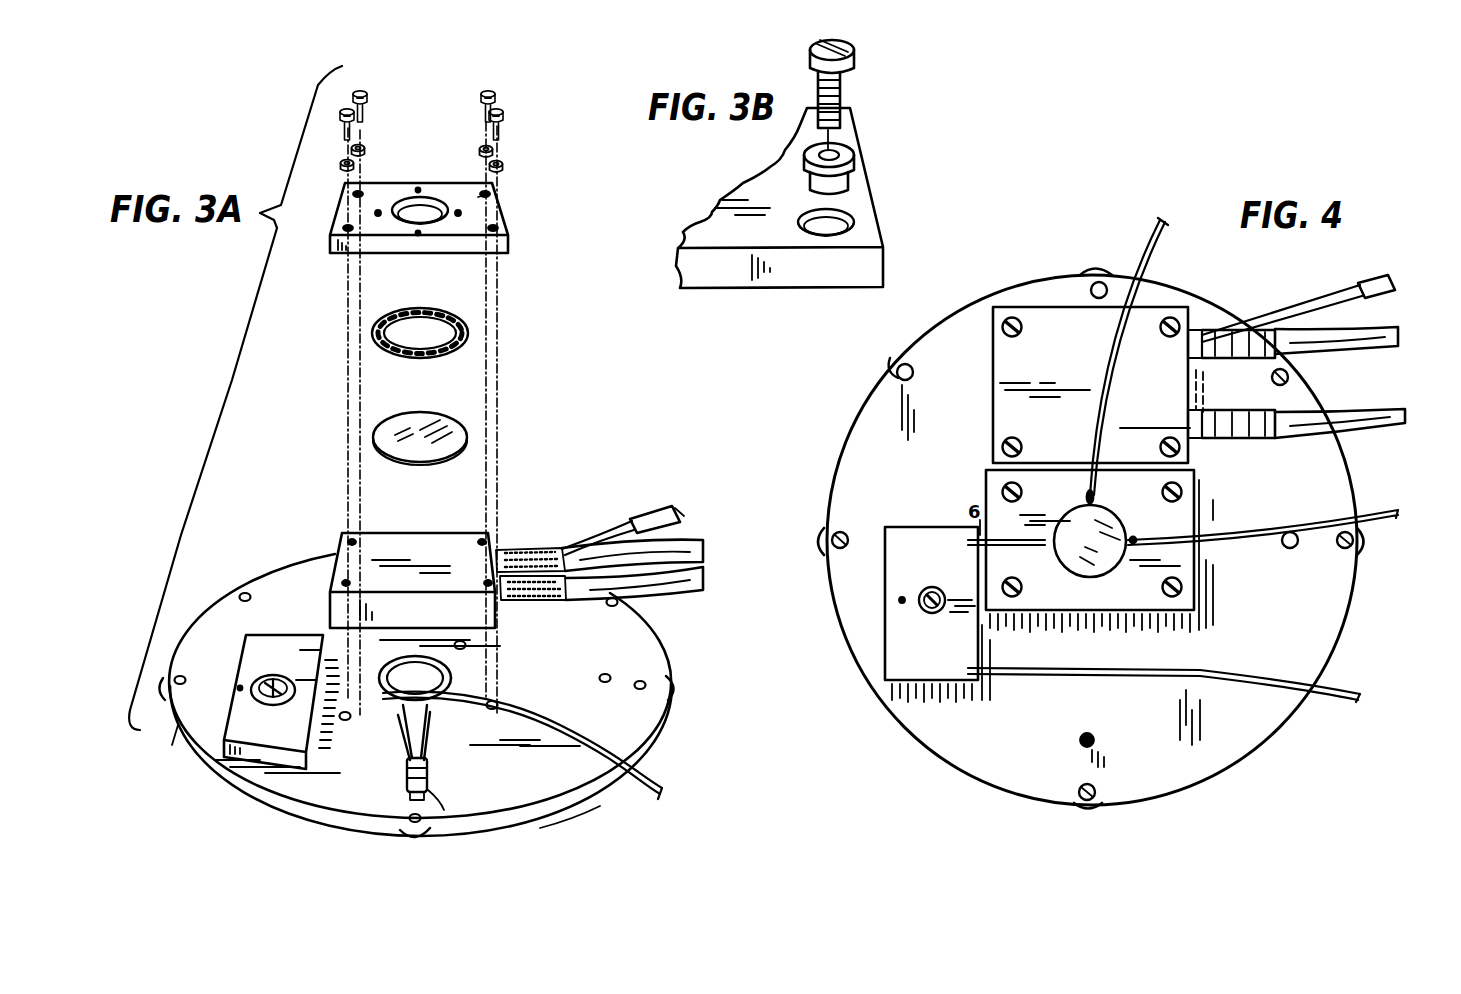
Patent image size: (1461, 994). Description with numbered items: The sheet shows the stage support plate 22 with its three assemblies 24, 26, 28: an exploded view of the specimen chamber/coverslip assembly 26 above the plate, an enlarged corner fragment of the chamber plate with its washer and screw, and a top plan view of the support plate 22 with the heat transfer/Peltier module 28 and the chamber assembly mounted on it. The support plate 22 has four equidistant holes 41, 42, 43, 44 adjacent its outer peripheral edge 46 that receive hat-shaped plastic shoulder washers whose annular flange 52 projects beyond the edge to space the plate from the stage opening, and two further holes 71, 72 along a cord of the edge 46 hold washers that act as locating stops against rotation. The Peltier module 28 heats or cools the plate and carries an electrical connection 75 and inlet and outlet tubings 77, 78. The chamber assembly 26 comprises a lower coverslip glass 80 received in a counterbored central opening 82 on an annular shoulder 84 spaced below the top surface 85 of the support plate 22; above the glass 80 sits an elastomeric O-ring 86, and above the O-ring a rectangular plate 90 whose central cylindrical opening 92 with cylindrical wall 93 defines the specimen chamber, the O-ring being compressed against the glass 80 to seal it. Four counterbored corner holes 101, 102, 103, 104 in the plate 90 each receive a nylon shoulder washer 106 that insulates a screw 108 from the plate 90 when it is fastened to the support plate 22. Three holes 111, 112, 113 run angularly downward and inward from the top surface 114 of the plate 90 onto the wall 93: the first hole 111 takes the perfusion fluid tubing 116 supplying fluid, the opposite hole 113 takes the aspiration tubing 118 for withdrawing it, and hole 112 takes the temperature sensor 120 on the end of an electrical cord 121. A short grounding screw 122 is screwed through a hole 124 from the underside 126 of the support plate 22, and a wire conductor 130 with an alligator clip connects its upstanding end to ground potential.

In FIG. 3A, the stage support plate 22 is at (178, 733).
In FIG. 3A, the assembly 24 is at (252, 658).
In FIG. 4, the assembly 24 is at (902, 545).
In FIG. 3A, the specimen chamber/coverslip assembly 26 is at (509, 371).
In FIG. 4, the specimen chamber/coverslip assembly 26 is at (1060, 587).
In FIG. 3A, the heat transfer/Peltier module 28 is at (472, 535).
In FIG. 4, the heat transfer/Peltier module 28 is at (1045, 340).
In FIG. 4, the hole 41 is at (848, 548).
In FIG. 4, the hole 42 is at (1112, 280).
In FIG. 4, the hole 43 is at (1350, 548).
In FIG. 4, the hole 44 is at (1100, 785).
In FIG. 3A, the outer peripheral edge 46 is at (222, 798).
In FIG. 4, the outer peripheral edge 46 is at (858, 410).
In FIG. 3A, the annular flange 52 is at (163, 690).
In FIG. 4, the annular flange 52 is at (1098, 282).
In FIG. 4, the hole 71 is at (895, 365).
In FIG. 4, the hole 72 is at (1290, 377).
In FIG. 3A, the electrical connection 75 is at (596, 527).
In FIG. 4, the electrical connection 75 is at (1305, 300).
In FIG. 3A, the inlet tubing 77 is at (655, 590).
In FIG. 4, the inlet tubing 77 is at (1385, 410).
In FIG. 3A, the outlet tubing 78 is at (665, 540).
In FIG. 4, the outlet tubing 78 is at (1385, 325).
In FIG. 3A, the lower coverslip glass 80 is at (466, 436).
In FIG. 3A, the counterbored central opening 82 is at (398, 695).
In FIG. 3A, the annular shoulder 84 is at (415, 745).
In FIG. 3A, the top surface 85 is at (500, 769).
In FIG. 4, the top surface 85 is at (1269, 633).
In FIG. 3A, the O-ring 86 is at (378, 336).
In FIG. 3A, the plate 90 is at (422, 188).
In FIG. 4, the plate 90 is at (1180, 553).
In FIG. 3A, the central cylindrical opening 92 is at (422, 214).
In FIG. 4, the central cylindrical opening 92 is at (1068, 548).
In FIG. 3A, the cylindrical wall 93 is at (410, 222).
In FIG. 3A, the counterbored corner hole 101 is at (343, 228).
In FIG. 3A, the counterbored corner hole 102 is at (360, 192).
In FIG. 3A, the counterbored corner hole 103 is at (490, 194).
In FIG. 3A, the counterbored corner hole 104 is at (498, 228).
In FIG. 3A, the nylon shoulder washer 106 is at (352, 150).
In FIG. 3B, the nylon shoulder washer 106 is at (806, 172).
In FIG. 3A, the screw 108 is at (356, 92).
In FIG. 3B, the screw 108 is at (810, 58).
In FIG. 3A, the first hole 111 is at (378, 216).
In FIG. 4, the first hole 111 is at (1037, 595).
In FIG. 3A, the hole 112 is at (418, 188).
In FIG. 4, the hole 112 is at (1095, 492).
In FIG. 3A, the hole 113 is at (460, 216).
In FIG. 4, the hole 113 is at (1132, 580).
In FIG. 3A, the top surface 114 is at (468, 197).
In FIG. 4, the top surface 114 is at (1047, 502).
In FIG. 4, the perfusion fluid tubing 116 is at (1000, 545).
In FIG. 4, the aspiration tubing 118 is at (1275, 530).
In FIG. 4, the temperature sensor 120 is at (1122, 540).
In FIG. 4, the electrical cord 121 is at (1105, 292).
In FIG. 3A, the grounding screw 122 is at (430, 795).
In FIG. 4, the grounding screw 122 is at (1090, 717).
In FIG. 4, the hole 124 is at (1097, 740).
In FIG. 3A, the underside 126 is at (572, 818).
In FIG. 3A, the wire conductor 130 is at (645, 775).